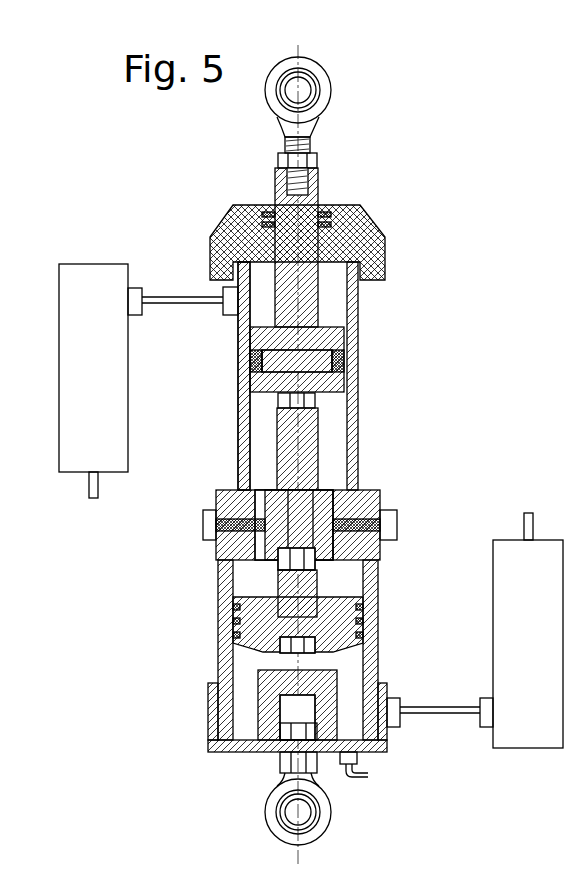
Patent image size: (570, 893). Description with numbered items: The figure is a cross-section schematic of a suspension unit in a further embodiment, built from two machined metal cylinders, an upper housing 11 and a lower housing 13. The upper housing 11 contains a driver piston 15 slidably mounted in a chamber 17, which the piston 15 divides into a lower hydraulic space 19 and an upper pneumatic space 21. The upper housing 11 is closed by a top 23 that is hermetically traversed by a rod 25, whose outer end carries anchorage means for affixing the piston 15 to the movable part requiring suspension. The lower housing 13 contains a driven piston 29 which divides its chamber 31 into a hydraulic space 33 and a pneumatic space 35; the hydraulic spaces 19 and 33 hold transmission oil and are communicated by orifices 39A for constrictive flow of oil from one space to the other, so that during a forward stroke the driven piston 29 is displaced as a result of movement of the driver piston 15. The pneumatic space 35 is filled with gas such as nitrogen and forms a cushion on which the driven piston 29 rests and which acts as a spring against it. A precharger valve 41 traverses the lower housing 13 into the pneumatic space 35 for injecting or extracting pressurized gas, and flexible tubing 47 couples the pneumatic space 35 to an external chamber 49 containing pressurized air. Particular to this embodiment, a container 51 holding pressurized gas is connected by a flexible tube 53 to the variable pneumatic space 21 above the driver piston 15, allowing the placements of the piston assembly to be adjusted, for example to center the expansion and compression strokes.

The upper housing 11 is at (358, 447).
The lower housing 13 is at (235, 612).
The piston 15 is at (345, 358).
The chamber 17 is at (338, 403).
The hydraulic space 19 is at (337, 482).
The pneumatic space 21 is at (335, 293).
The top 23 is at (235, 213).
The rod 25 is at (240, 450).
The piston 29 is at (265, 652).
The chamber 31 is at (345, 597).
The hydraulic space 33 is at (260, 572).
The pneumatic space 35 is at (245, 705).
The orifices 39A is at (216, 497).
The precharger valve 41 is at (355, 770).
The flexible tubing 47 is at (445, 712).
The external chamber 49 is at (510, 612).
The container 51 is at (122, 422).
The flexible tube 53 is at (183, 305).